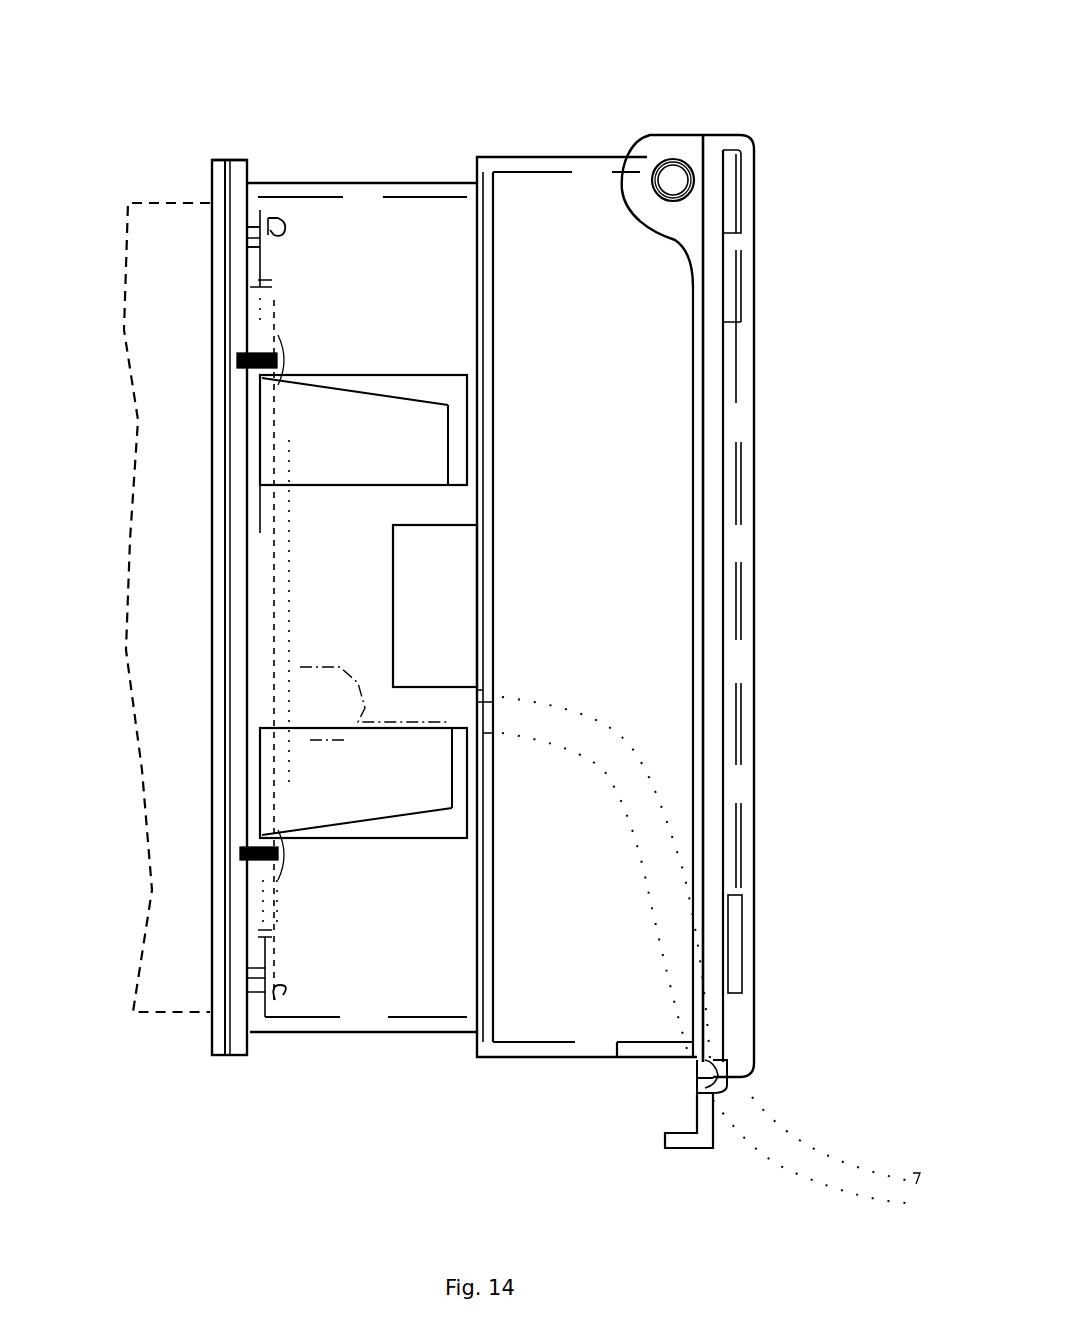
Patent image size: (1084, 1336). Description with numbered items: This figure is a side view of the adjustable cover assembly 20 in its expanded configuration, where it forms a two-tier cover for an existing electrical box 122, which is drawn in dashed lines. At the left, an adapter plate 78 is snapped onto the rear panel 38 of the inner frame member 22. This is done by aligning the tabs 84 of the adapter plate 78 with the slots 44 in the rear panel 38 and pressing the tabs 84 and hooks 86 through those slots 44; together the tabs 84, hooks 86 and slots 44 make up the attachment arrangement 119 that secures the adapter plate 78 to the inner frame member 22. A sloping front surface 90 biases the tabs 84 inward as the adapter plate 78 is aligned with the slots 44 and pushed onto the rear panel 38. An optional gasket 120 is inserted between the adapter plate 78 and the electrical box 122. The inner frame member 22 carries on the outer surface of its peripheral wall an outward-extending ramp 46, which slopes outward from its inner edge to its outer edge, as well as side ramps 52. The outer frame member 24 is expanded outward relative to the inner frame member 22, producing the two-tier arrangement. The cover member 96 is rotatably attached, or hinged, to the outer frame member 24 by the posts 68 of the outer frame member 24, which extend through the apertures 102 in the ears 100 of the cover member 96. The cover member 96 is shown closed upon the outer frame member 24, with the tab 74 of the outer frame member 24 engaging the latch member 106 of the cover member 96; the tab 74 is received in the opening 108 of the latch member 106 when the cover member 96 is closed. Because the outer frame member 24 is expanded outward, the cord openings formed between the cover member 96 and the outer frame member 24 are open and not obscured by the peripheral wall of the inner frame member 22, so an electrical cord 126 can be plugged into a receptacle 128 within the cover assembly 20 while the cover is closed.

The adjustable cover assembly 20 is at (377, 1085).
The inner frame member 22 is at (360, 183).
The outer frame member 24 is at (565, 157).
The rear panel 38 is at (262, 286).
The slots 44 is at (262, 245).
The outward-extending ramp 46 is at (435, 606).
The side ramps 52 is at (363, 606).
The posts 68 is at (676, 181).
The tab 74 is at (727, 1093).
The adapter plate 78 is at (233, 160).
The tabs 84 is at (286, 230).
The hooks 86 is at (283, 216).
The sloping front surface 90 is at (284, 990).
The cover member 96 is at (738, 135).
The ears 100 is at (615, 183).
The apertures 102 is at (687, 200).
The latch member 106 is at (688, 1150).
The opening 108 is at (705, 1088).
The attachment arrangement 119 is at (283, 198).
The gasket 120 is at (216, 180).
The electrical box 122 is at (167, 607).
The electrical cord 126 is at (615, 742).
The receptacle 128 is at (290, 505).